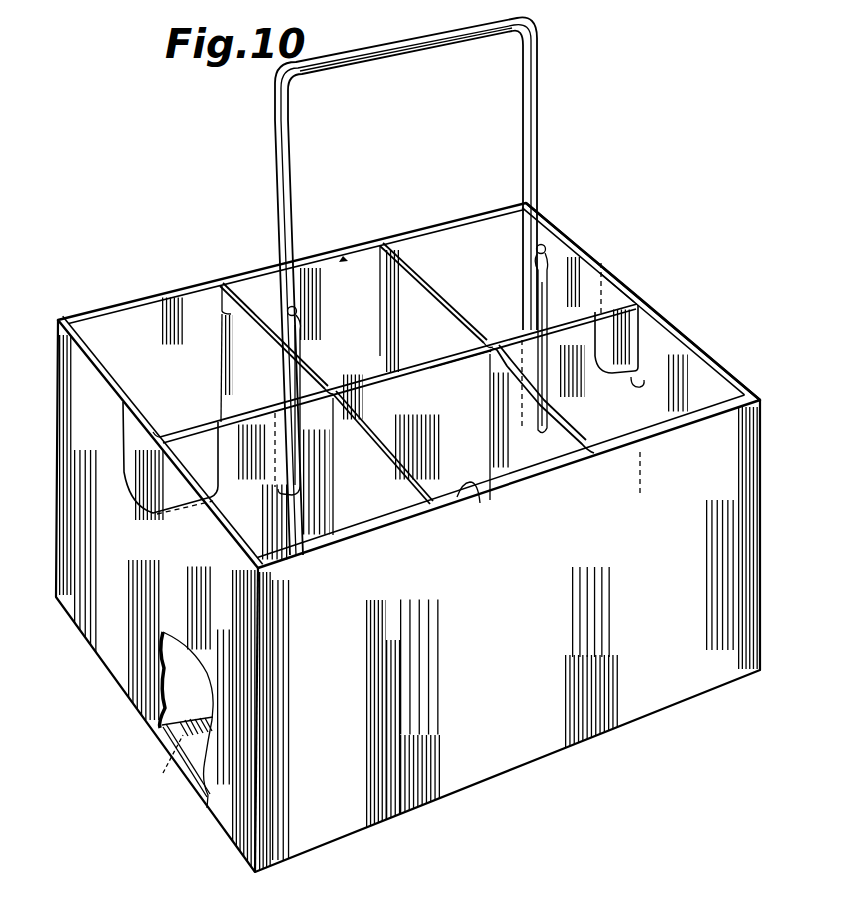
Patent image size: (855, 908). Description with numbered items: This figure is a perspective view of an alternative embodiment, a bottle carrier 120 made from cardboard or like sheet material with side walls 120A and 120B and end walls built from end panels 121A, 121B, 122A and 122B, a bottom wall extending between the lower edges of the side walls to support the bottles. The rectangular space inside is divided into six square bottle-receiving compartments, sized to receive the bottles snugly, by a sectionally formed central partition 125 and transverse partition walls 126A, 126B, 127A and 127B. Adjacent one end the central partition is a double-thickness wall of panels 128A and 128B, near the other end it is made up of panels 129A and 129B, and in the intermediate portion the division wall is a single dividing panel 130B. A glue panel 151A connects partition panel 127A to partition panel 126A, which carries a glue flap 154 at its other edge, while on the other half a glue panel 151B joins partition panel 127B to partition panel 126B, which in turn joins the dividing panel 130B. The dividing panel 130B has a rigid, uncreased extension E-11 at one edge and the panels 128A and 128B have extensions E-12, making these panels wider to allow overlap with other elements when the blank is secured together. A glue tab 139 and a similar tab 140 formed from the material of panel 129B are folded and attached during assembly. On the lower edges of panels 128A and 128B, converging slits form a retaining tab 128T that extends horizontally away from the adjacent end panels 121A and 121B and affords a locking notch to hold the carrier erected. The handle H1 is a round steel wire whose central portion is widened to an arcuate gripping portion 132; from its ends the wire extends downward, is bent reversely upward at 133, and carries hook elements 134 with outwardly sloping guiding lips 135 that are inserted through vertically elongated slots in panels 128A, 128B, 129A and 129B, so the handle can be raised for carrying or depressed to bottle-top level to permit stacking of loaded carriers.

The bottle carrier 120 is at (246, 220).
The side wall 120A is at (133, 300).
The side wall 120B is at (626, 692).
The end panel 121A is at (107, 628).
The end panel 121B is at (227, 768).
The end panel 122A is at (563, 228).
The end panel 122B is at (711, 357).
The sectional central partition 125 is at (596, 339).
The transverse partition wall 126A is at (218, 280).
The transverse partition wall 126B is at (410, 494).
The transverse partition wall 127A is at (432, 322).
The transverse partition wall 127B is at (566, 440).
The central partition panel 128A is at (250, 408).
The central partition panel 128B is at (258, 517).
The retaining tab 128T is at (163, 720).
The central partition panel 129A is at (589, 305).
The central partition panel 129B is at (642, 383).
The dividing panel 130B is at (453, 362).
The gripping portion 132 is at (483, 36).
The reversely bent portion 133 is at (536, 296).
The hook element 134 is at (533, 259).
The guiding lip 135 is at (536, 248).
The glue tab 139 is at (130, 430).
The tab 140 is at (621, 279).
The glue panel 151A is at (343, 256).
The glue panel 151B is at (480, 503).
The glue flap 154 is at (352, 380).
The handle H1 is at (414, 50).
The extension E-11 is at (500, 360).
The extension E-12 is at (357, 392).